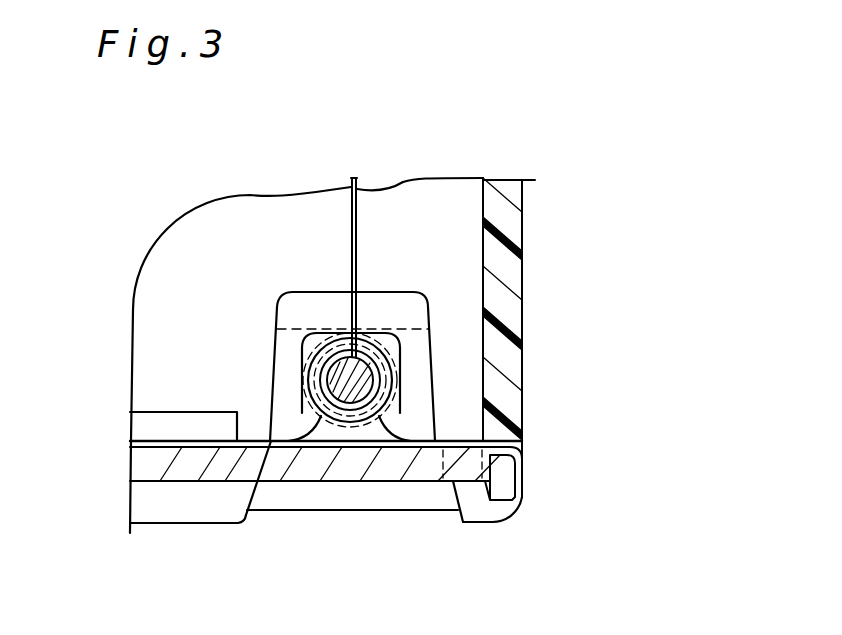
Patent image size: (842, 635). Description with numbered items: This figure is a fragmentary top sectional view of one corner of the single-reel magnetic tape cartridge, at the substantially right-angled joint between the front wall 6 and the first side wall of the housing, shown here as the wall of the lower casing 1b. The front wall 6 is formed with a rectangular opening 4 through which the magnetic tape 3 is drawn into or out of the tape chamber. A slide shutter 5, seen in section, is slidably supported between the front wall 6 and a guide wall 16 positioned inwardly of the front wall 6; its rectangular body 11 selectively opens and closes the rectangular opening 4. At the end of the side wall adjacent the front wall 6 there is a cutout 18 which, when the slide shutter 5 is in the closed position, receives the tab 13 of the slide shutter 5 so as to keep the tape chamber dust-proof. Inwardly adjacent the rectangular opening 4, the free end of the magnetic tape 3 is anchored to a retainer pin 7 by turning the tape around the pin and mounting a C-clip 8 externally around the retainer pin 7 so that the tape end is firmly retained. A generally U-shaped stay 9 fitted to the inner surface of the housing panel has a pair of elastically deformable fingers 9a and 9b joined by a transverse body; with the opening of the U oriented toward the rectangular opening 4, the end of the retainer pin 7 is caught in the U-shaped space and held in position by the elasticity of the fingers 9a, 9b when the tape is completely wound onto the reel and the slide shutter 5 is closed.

The lower casing 1b is at (527, 230).
The magnetic tape 3 is at (348, 206).
The rectangular opening 4 is at (282, 493).
The slide shutter 5 is at (372, 492).
The front wall 6 is at (145, 508).
The retainer pin 7 is at (400, 318).
The C-clip 8 is at (407, 357).
The stay 9 is at (286, 290).
The finger 9a is at (277, 386).
The finger 9b is at (423, 410).
The rectangular body 11 is at (137, 458).
The tab 13 is at (505, 480).
The guide wall 16 is at (158, 410).
The cutout 18 is at (507, 457).